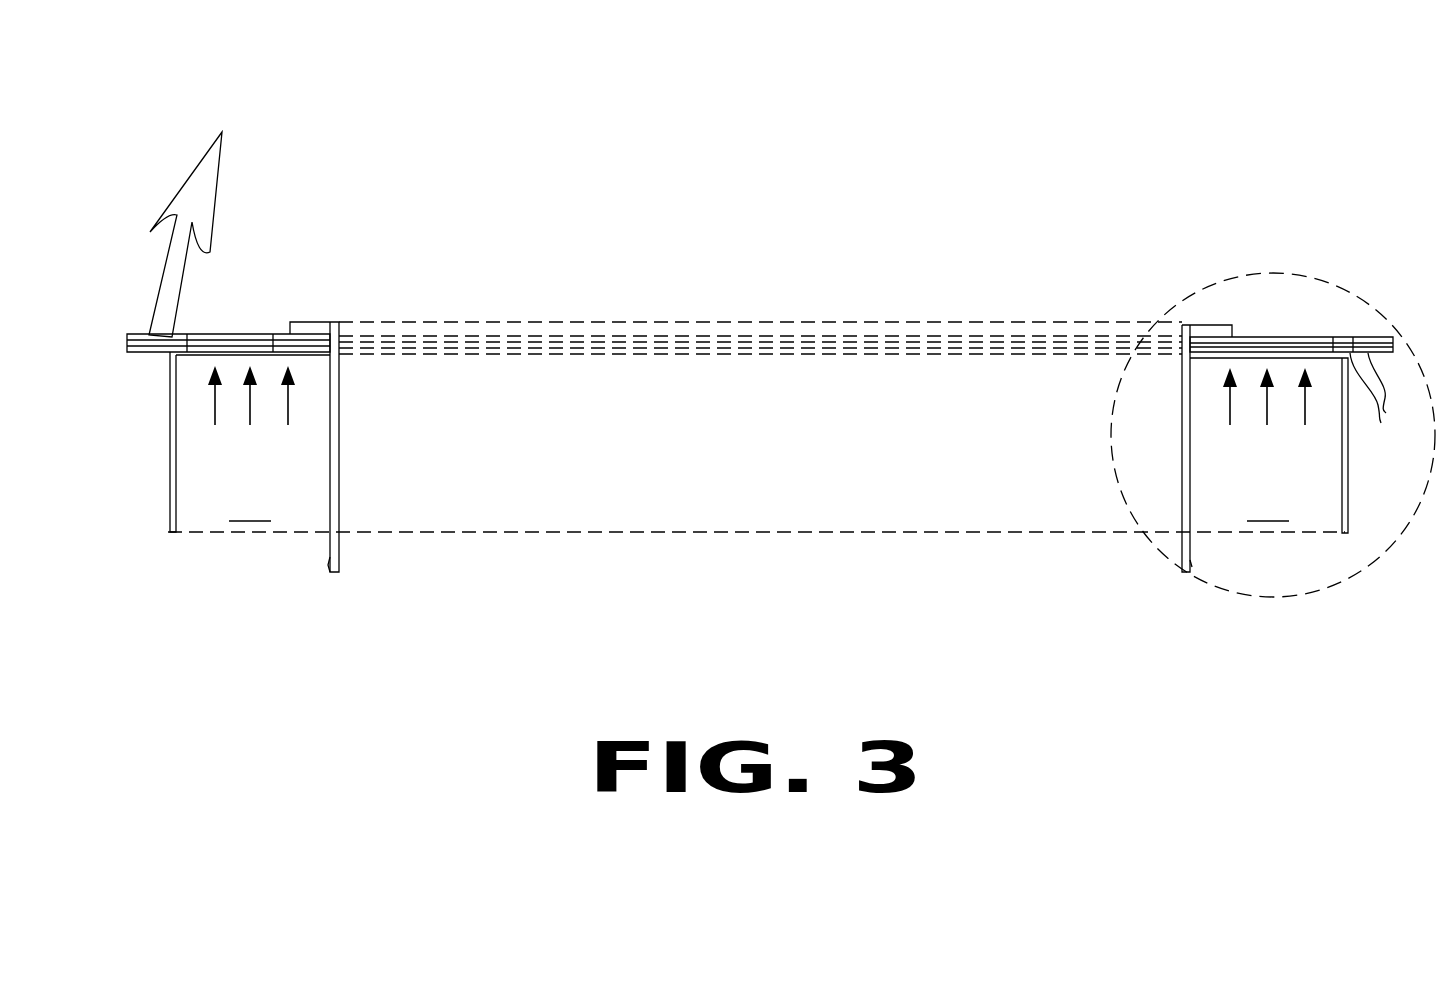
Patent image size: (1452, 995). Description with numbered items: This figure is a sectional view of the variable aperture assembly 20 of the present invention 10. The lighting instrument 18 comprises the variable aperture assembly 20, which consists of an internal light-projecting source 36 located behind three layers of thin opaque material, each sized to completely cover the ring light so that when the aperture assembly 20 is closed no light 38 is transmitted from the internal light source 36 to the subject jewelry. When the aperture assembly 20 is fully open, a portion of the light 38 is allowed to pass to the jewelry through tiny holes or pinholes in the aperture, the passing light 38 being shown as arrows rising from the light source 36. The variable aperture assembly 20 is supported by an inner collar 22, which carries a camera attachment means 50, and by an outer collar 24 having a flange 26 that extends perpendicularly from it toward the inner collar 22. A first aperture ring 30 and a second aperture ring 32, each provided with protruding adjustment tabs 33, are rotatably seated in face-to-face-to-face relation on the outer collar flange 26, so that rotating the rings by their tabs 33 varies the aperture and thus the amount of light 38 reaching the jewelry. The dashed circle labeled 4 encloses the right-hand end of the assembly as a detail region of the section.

The present invention 10 is at (1183, 160).
The lighting instrument 18 is at (1033, 250).
The variable aperture assembly 20 is at (1317, 223).
The detail view circle 4 is at (1278, 273).
The inner collar 22 is at (340, 427).
The outer collar 24 is at (170, 505).
The flange 26 is at (203, 357).
The first aperture ring 30 is at (273, 337).
The second aperture ring 32 is at (222, 335).
The adjustment tabs 33 is at (781, 271).
The internal light-projecting source 36 is at (759, 477).
The light 38 is at (288, 405).
The camera attachment means 50 is at (322, 557).